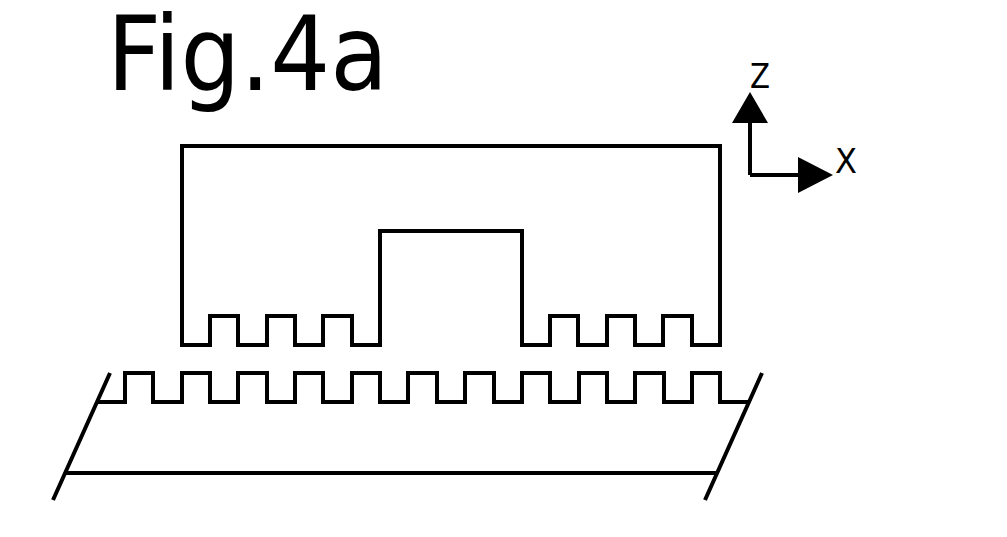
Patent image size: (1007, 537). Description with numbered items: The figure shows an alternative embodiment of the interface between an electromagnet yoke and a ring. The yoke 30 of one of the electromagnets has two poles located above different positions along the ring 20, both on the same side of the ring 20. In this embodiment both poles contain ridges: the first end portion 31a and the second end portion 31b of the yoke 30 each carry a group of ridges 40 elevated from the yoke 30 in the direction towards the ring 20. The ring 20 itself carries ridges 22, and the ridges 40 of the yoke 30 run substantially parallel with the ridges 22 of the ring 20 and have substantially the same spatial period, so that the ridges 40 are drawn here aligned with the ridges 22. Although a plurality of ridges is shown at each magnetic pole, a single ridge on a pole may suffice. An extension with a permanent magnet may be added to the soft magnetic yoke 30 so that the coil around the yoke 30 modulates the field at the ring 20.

The ring 20 is at (692, 457).
The ridges of ring 22 is at (723, 374).
The yoke 30 is at (604, 146).
The first end portion 31a is at (182, 332).
The second end portion 31b is at (724, 330).
The ridges 40 is at (197, 343).